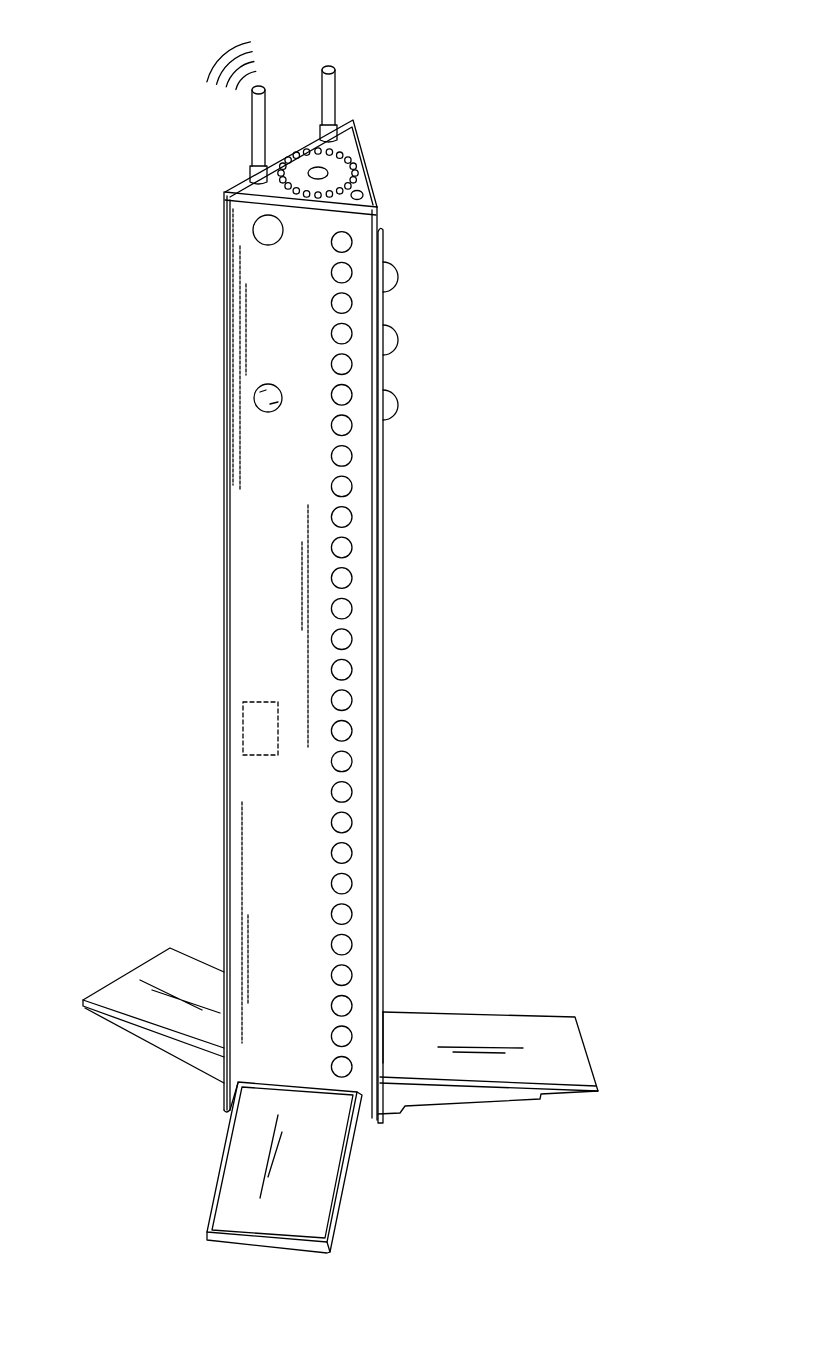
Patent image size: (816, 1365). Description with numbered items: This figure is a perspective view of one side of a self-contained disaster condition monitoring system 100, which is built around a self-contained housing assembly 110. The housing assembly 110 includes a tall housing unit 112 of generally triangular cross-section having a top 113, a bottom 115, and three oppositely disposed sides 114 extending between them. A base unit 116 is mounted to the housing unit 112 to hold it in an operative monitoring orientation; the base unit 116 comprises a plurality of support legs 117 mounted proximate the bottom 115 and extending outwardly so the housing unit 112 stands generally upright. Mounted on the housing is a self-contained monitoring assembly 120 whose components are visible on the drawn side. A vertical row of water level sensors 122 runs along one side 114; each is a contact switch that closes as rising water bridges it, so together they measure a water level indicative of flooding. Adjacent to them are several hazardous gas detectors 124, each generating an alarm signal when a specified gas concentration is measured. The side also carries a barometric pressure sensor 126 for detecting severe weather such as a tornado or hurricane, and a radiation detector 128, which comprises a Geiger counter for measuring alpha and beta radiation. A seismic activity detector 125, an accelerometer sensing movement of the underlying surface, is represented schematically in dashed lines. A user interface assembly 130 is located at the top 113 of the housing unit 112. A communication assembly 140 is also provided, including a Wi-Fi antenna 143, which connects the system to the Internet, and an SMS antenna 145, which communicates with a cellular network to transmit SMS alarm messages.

The self-contained disaster condition monitoring system 100 is at (593, 108).
The self-contained housing assembly 110 is at (214, 407).
The housing unit 112 is at (223, 478).
The top 113 is at (347, 147).
The sides 114 is at (262, 304).
The bottom 115 is at (362, 1125).
The base unit 116 is at (127, 1045).
The support legs 117 is at (210, 1197).
The self-contained monitoring assembly 120 is at (423, 473).
The water level sensors 122 is at (352, 455).
The hazardous gas detector 124 is at (398, 277).
The seismic activity detector 125 is at (242, 713).
The barometric pressure sensor 126 is at (257, 229).
The radiation detector 128 is at (257, 405).
The user interface assembly 130 is at (385, 173).
The communication assembly 140 is at (373, 78).
The Wi-Fi antenna 143 is at (249, 149).
The SMS antenna 145 is at (335, 115).